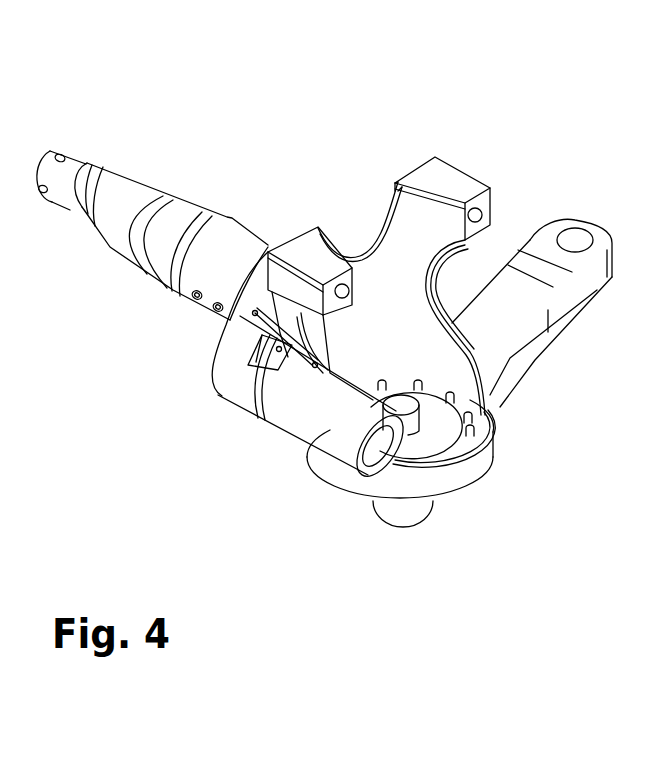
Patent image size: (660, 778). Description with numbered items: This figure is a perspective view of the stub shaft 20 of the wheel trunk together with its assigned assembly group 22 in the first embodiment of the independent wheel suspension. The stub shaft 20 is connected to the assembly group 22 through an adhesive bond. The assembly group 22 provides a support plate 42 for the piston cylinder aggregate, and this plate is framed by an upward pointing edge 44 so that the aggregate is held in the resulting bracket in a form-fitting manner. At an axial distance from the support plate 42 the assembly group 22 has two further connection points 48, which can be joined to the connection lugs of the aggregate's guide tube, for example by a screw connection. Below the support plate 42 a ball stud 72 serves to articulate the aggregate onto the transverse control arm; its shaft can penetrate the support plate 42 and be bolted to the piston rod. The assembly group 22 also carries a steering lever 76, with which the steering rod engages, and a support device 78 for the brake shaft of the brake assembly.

The stub shaft 20 is at (130, 197).
The assembly group 22 is at (400, 230).
The connection points 48 is at (338, 278).
The steering lever 76 is at (525, 303).
The support device 78 is at (302, 400).
The support plate 42 is at (447, 423).
The upward pointing edge 44 is at (463, 458).
The ball stud 72 is at (407, 512).